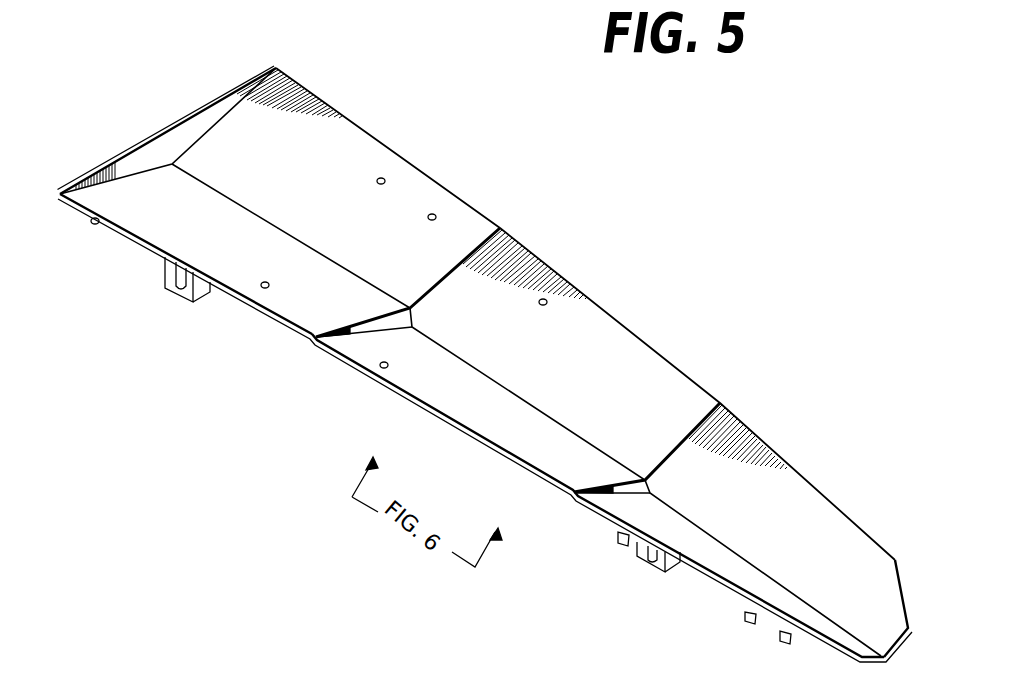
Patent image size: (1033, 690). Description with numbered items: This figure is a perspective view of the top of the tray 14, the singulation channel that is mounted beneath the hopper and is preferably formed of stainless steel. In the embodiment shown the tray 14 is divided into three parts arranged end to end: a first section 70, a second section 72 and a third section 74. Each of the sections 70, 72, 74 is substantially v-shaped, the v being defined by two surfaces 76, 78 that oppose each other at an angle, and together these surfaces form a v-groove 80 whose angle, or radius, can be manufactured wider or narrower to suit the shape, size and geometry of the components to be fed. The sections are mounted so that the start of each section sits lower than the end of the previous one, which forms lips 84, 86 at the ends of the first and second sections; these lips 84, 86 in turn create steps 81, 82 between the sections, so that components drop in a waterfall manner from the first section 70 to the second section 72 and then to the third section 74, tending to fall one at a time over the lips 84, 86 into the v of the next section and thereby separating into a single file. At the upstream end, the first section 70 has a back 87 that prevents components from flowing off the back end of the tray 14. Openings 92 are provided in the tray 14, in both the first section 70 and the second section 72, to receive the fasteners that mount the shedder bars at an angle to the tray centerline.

The tray 14 is at (675, 184).
The first section 70 is at (404, 89).
The second section 72 is at (705, 312).
The third section 74 is at (875, 467).
The surface 76 is at (150, 218).
The surface 78 is at (296, 112).
The v-groove 80 is at (247, 204).
The step 81 is at (350, 337).
The step 82 is at (613, 490).
The lip 84 is at (505, 244).
The lip 86 is at (722, 410).
The back 87 is at (168, 152).
The openings 92 is at (433, 214).